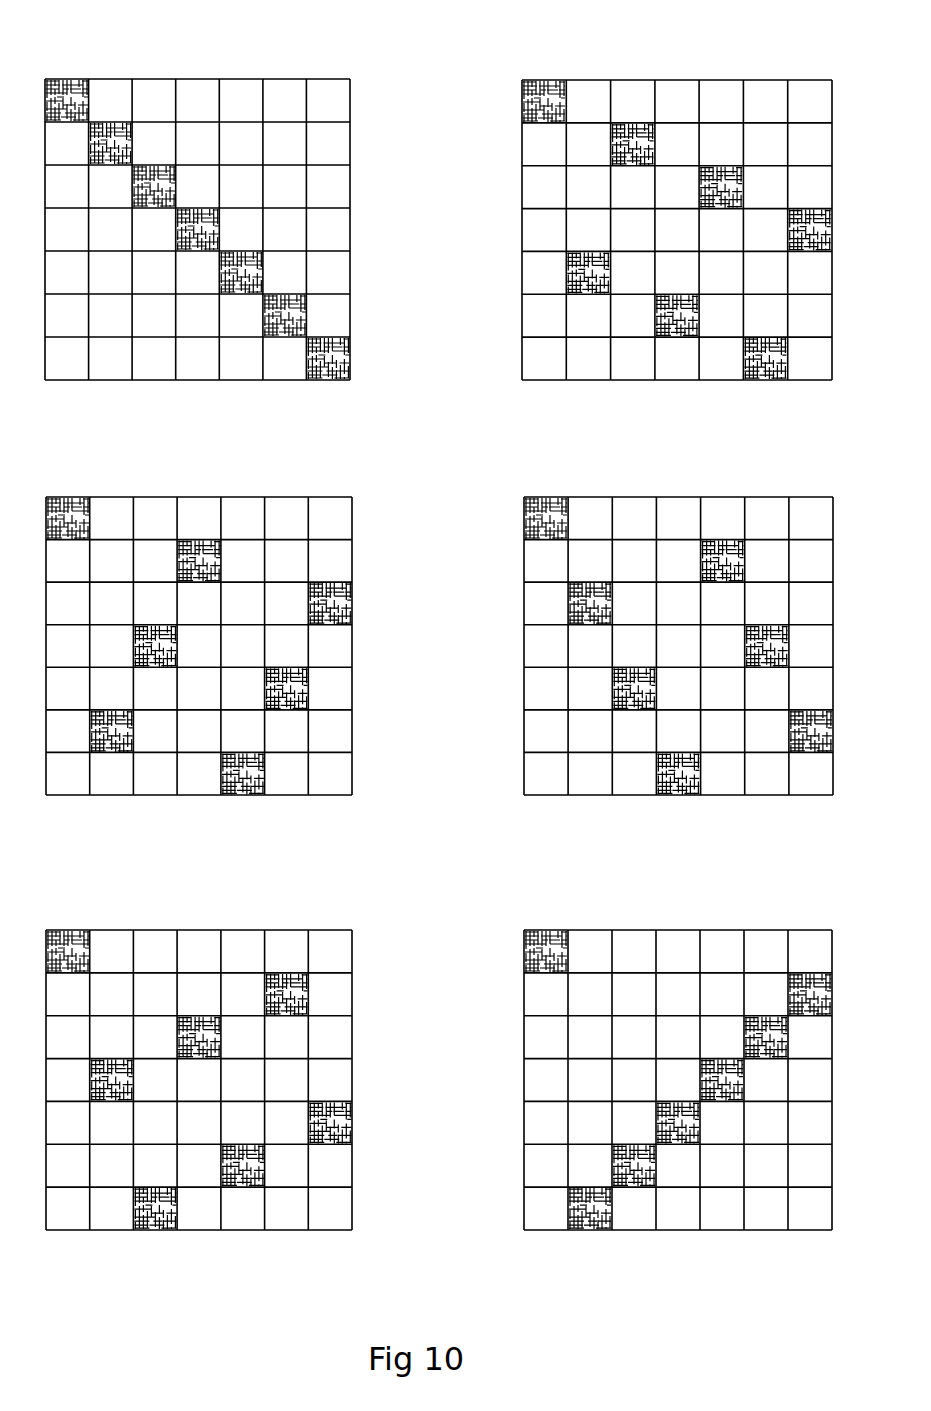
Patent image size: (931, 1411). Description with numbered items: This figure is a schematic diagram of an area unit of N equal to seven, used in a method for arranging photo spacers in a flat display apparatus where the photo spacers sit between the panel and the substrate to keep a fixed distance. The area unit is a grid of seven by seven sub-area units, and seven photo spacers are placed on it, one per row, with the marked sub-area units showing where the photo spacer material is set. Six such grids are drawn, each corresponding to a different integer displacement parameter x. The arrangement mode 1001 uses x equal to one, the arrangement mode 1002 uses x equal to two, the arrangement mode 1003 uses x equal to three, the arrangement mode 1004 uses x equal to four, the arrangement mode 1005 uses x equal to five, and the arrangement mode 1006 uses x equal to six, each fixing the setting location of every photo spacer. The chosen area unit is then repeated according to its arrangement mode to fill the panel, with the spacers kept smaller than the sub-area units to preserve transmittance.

The arrangement mode 1001 is at (366, 146).
The arrangement mode 1002 is at (508, 323).
The arrangement mode 1003 is at (369, 562).
The arrangement mode 1004 is at (509, 738).
The arrangement mode 1005 is at (369, 998).
The arrangement mode 1006 is at (509, 1173).